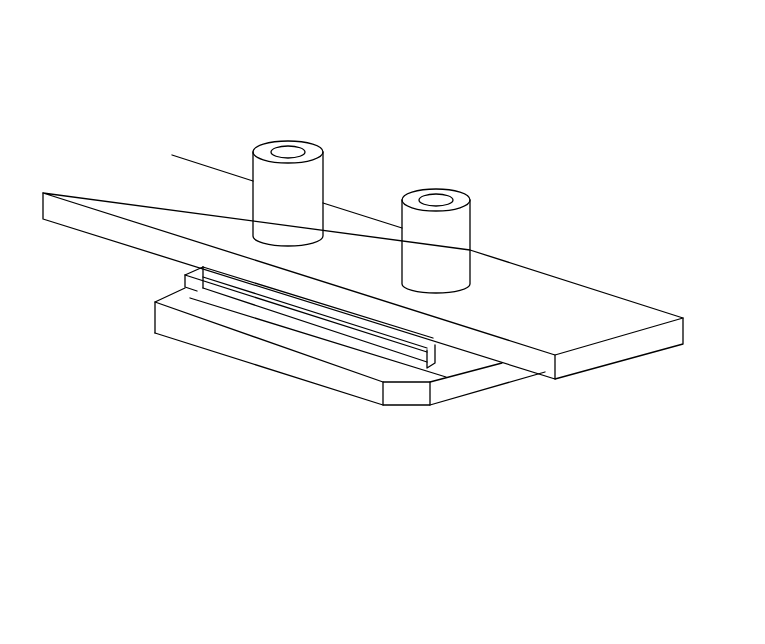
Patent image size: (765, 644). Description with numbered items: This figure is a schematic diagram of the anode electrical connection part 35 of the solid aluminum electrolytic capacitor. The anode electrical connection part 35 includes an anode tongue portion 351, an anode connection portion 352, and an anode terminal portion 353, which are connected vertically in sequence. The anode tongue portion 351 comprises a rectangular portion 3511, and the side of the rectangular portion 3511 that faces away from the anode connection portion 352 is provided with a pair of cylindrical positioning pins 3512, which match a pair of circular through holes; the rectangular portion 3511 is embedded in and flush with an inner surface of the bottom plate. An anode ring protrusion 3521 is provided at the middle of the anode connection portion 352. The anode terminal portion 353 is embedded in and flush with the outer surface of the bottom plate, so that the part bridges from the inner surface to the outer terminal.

The anode electrical connection part 35 is at (230, 82).
The anode tongue portion 351 is at (575, 479).
The rectangular portion 3511 is at (532, 302).
The cylindrical positioning pins 3512 is at (430, 236).
The anode connection portion 352 is at (291, 306).
The anode ring protrusion 3521 is at (191, 292).
The anode terminal portion 353 is at (381, 383).